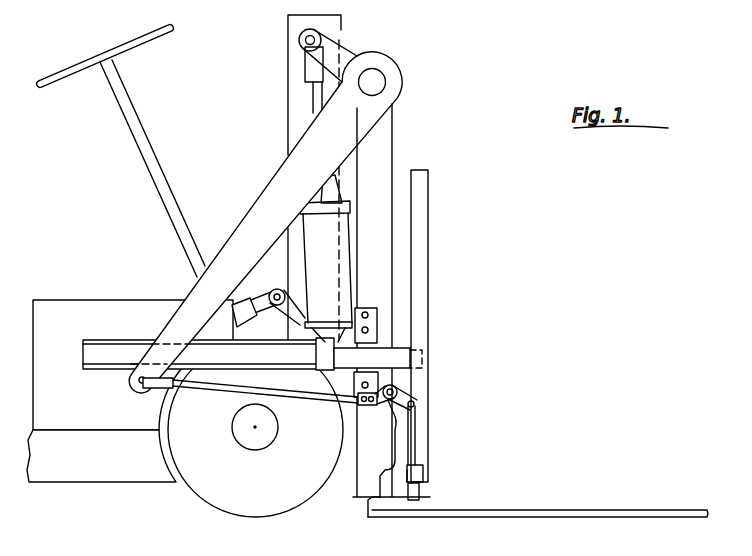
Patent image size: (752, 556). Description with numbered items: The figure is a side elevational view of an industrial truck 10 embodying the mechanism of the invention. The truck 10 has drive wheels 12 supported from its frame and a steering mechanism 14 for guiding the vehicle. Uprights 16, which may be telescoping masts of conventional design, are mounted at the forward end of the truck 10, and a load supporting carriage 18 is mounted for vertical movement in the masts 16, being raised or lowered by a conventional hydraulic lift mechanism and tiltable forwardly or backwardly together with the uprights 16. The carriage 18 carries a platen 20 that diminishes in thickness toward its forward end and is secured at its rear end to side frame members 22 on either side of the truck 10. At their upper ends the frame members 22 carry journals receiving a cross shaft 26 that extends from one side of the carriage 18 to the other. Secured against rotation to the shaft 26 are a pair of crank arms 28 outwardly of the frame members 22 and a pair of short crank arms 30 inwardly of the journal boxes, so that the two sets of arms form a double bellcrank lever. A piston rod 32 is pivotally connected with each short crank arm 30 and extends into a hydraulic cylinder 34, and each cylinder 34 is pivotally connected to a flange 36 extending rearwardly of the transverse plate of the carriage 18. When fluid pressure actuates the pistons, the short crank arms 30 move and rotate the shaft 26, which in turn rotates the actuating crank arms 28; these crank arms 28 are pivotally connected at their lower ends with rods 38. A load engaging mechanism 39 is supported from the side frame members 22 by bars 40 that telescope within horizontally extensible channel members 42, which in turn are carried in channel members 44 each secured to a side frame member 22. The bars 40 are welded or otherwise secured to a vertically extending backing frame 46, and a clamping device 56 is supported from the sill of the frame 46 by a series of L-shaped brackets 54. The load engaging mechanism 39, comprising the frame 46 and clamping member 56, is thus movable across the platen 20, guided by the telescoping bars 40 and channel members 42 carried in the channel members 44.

The industrial truck 10 is at (110, 230).
The drive wheels 12 is at (238, 503).
The steering mechanism 14 is at (143, 40).
The uprights 16 is at (295, 62).
The load supporting carriage 18 is at (448, 93).
The platen 20 is at (603, 510).
The side frame members 22 is at (383, 146).
The cross shaft 26 is at (375, 81).
The crank arms 28 is at (308, 158).
The short crank arms 30 is at (347, 50).
The piston rod 32 is at (312, 100).
The hydraulic cylinder 34 is at (328, 232).
The flange 36 is at (378, 358).
The rods 38 is at (214, 391).
The load engaging mechanism 39 is at (468, 330).
The bars 40 is at (398, 352).
The horizontally extensible channel members 42 is at (282, 347).
The channel members 44 is at (127, 342).
The backing frame 46 is at (430, 285).
The L-shaped brackets 54 is at (388, 477).
The clamping device 56 is at (437, 498).